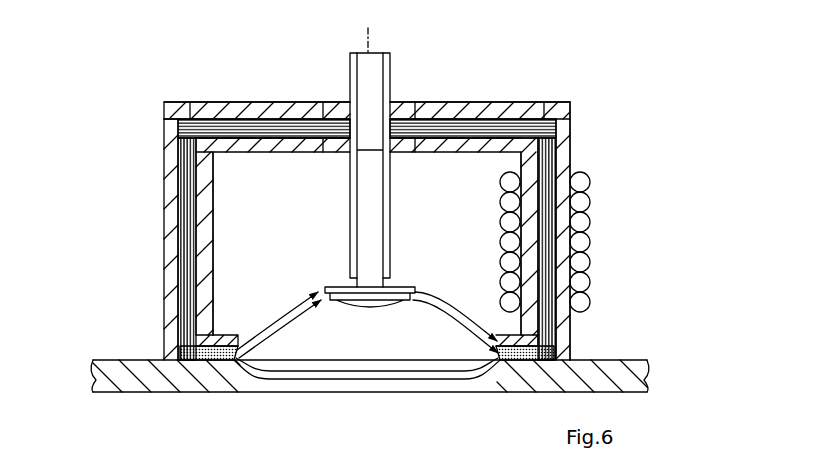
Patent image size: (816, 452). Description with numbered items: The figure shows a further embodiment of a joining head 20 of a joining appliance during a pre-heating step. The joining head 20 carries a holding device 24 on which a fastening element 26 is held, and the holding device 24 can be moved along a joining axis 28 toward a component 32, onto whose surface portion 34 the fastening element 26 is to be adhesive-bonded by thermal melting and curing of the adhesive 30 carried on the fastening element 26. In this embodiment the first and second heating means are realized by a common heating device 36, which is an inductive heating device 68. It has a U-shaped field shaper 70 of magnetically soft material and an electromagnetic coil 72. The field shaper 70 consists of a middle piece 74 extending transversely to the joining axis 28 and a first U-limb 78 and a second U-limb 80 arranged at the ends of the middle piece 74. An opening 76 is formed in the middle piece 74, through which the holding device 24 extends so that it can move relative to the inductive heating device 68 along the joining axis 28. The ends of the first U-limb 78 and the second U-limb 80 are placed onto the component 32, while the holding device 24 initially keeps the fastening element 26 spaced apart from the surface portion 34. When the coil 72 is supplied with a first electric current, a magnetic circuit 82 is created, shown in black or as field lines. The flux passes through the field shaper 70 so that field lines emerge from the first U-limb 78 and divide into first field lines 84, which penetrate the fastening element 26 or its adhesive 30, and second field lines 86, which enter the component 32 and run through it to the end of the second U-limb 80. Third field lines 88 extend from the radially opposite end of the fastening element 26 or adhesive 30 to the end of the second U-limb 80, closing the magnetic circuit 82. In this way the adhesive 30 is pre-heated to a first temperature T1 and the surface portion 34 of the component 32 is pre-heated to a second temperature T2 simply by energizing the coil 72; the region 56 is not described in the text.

The joining head 20 is at (391, 229).
The holding device 24 is at (351, 146).
The fastening element 26 is at (372, 192).
The joining axis 28 is at (368, 32).
The adhesive 30 is at (360, 307).
The component 32 is at (625, 378).
The surface portion 34 is at (391, 359).
The heating device 36 is at (375, 186).
The chamber 56 is at (392, 451).
The inductive heating device 68 is at (617, 210).
The field shaper 70 is at (163, 99).
The electromagnetic coil 72 is at (583, 245).
The middle piece 74 is at (502, 97).
The opening 76 is at (337, 110).
The first U-limb 78 is at (177, 257).
The second U-limb 80 is at (557, 335).
The magnetic circuit 82 is at (183, 227).
The first field lines 84 is at (367, 282).
The second field lines 86 is at (259, 388).
The third field lines 88 is at (463, 308).
The first temperature T1 is at (373, 303).
The second temperature T2 is at (320, 363).